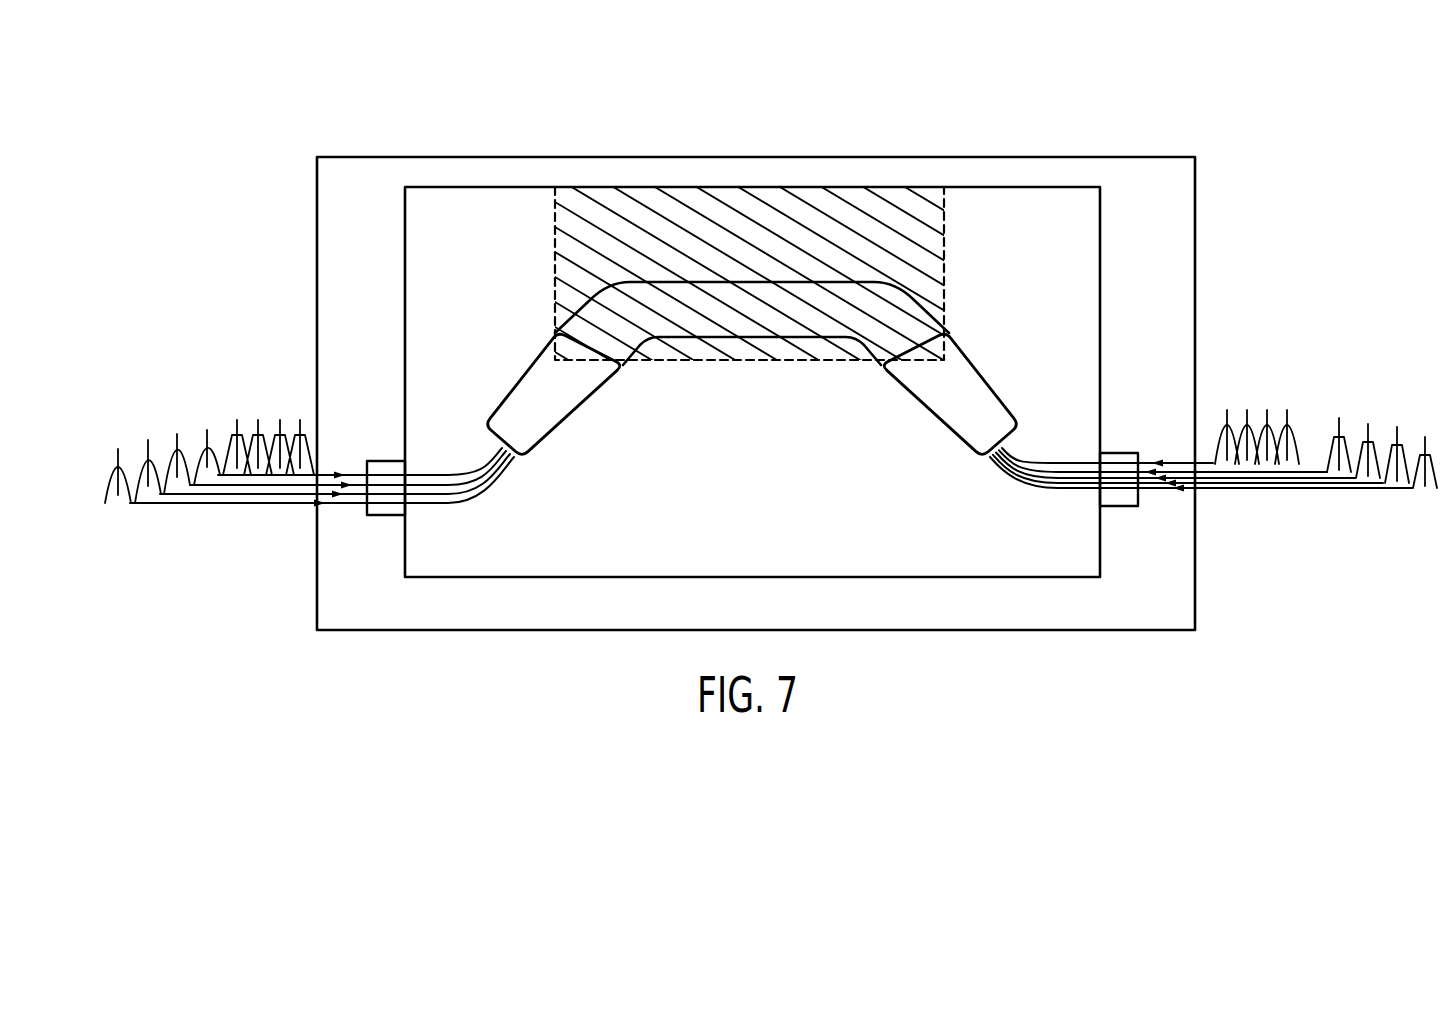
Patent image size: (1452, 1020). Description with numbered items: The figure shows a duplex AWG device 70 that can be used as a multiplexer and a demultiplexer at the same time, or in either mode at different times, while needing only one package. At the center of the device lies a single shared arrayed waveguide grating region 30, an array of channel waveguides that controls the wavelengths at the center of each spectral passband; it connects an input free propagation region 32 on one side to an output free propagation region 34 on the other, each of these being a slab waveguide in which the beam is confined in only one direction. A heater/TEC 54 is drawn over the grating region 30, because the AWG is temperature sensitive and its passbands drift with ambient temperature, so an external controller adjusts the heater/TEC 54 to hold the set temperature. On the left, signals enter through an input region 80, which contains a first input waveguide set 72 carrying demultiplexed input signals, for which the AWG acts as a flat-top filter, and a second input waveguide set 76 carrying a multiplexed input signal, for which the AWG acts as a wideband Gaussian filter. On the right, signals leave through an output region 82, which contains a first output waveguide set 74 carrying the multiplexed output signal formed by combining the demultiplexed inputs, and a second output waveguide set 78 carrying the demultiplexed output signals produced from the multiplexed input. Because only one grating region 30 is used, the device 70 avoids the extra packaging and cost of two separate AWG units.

The duplex AWG device 70 is at (1178, 138).
The heater/TEC 54 is at (922, 236).
The arrayed waveguide grating region 30 is at (782, 322).
The input free propagation region 32 is at (565, 406).
The output free propagation region 34 is at (958, 406).
The first input waveguide set 72 is at (457, 486).
The first output waveguide set 74 is at (1023, 450).
The second input waveguide set 76 is at (410, 505).
The second output waveguide set 78 is at (1083, 465).
The input region 80 is at (508, 459).
The output region 82 is at (1082, 500).